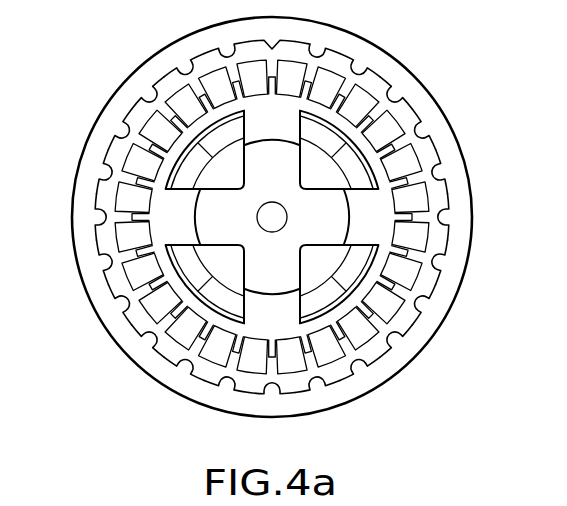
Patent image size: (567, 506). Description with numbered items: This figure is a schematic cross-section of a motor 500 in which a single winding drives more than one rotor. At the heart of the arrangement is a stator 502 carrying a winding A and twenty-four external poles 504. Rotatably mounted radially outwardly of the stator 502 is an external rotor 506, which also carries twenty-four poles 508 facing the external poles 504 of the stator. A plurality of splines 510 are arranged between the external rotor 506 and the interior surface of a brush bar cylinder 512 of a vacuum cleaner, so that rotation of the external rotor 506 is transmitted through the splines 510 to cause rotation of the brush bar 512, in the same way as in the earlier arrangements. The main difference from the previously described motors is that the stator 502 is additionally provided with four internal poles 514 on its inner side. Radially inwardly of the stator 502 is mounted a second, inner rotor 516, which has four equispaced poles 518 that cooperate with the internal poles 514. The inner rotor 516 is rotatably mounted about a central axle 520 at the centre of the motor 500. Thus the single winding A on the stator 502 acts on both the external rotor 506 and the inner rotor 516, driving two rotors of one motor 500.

The motor 500 is at (433, 100).
The stator 502 is at (168, 208).
The external poles 504 is at (160, 153).
The external rotor 506 is at (308, 24).
The poles 508 is at (383, 110).
The splines 510 is at (143, 342).
The brush bar cylinder 512 is at (172, 373).
The internal poles 514 is at (367, 222).
The inner rotor 516 is at (285, 258).
The equispaced poles 518 is at (272, 140).
The central axle 520 is at (272, 217).